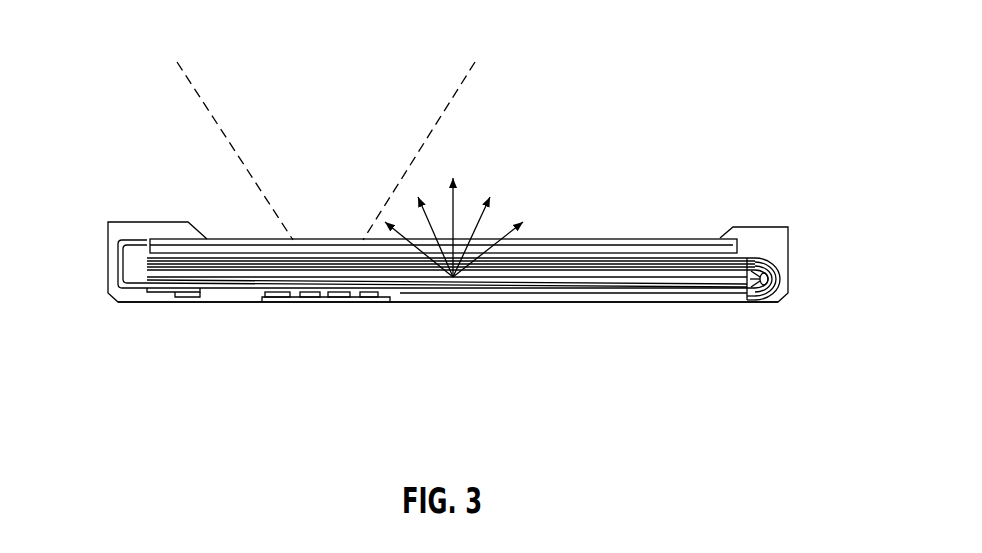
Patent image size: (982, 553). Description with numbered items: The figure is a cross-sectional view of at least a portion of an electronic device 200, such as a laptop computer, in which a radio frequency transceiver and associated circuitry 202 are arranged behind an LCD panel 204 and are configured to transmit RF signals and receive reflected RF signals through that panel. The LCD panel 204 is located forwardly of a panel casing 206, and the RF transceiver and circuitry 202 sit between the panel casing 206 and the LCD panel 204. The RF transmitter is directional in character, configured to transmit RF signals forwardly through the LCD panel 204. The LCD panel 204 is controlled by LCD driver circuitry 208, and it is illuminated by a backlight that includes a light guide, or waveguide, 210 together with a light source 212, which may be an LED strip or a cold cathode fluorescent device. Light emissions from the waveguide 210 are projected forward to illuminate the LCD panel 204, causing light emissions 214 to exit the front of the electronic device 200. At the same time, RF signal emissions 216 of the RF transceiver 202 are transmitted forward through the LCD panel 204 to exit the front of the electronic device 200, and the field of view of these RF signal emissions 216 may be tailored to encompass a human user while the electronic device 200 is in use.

The electronic device 200 is at (448, 235).
The radio frequency transceiver and associated circuitry 202 is at (345, 302).
The LCD panel 204 is at (600, 240).
The panel casing 206 is at (466, 303).
The LCD driver circuitry 208 is at (157, 300).
The light guide 210 is at (582, 288).
The light source 212 is at (757, 300).
The light emissions 214 is at (547, 186).
The RF signal emissions 216 is at (335, 159).